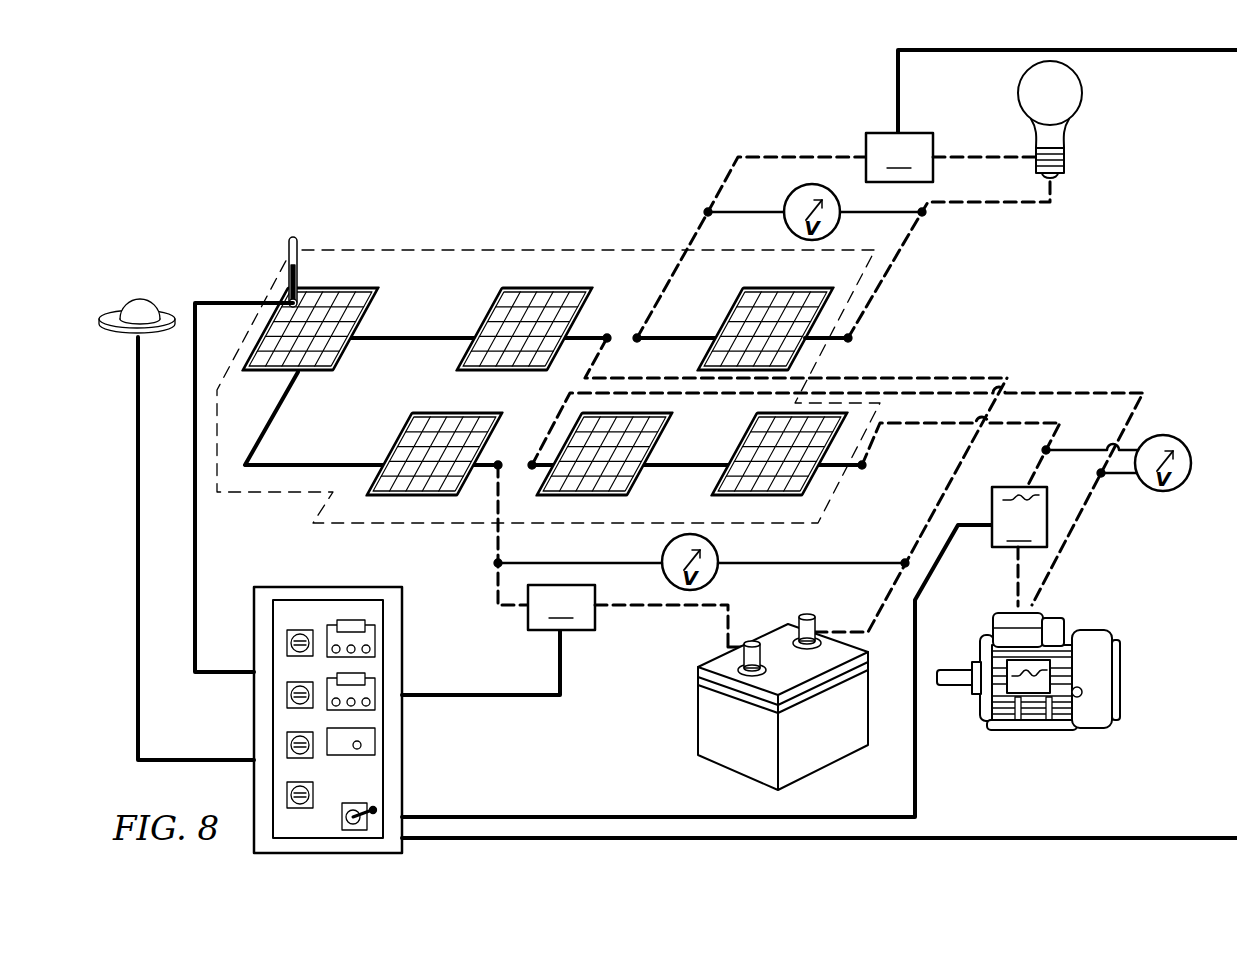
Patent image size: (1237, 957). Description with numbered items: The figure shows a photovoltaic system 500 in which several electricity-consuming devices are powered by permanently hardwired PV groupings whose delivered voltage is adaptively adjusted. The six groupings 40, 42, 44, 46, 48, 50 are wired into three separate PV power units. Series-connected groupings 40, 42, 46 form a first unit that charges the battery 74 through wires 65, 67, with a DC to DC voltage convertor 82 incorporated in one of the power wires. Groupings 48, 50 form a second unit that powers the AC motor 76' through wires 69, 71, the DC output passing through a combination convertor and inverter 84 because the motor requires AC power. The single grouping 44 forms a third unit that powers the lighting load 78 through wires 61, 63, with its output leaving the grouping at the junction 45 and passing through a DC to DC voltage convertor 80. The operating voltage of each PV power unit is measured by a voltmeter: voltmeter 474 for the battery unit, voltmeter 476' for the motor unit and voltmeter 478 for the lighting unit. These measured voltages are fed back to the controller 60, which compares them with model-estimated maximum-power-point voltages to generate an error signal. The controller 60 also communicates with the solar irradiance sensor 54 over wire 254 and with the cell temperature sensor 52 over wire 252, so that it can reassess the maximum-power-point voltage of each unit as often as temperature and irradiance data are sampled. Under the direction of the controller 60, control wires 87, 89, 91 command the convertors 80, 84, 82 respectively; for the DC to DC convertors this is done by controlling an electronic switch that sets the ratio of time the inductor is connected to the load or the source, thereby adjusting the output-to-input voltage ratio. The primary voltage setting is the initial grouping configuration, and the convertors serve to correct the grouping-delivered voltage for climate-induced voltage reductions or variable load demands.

The grouping 40 is at (342, 281).
The grouping 42 is at (557, 281).
The grouping 44 is at (802, 281).
The junction node 45 is at (855, 338).
The grouping 46 is at (422, 521).
The grouping 48 is at (595, 521).
The grouping 50 is at (773, 521).
The cell temperature sensor 52 is at (290, 273).
The solar irradiance sensor 54 is at (110, 317).
The controller 60 is at (405, 780).
The wire 61 is at (1000, 155).
The wire 63 is at (1002, 204).
The wire 65 is at (875, 618).
The wire 67 is at (655, 608).
The wire 69 is at (1068, 393).
The wire 71 is at (1050, 428).
The battery 74 is at (700, 730).
The AC motor 76' is at (1074, 673).
The lighting load 78 is at (1075, 116).
The voltage convertor 80 is at (1051, 116).
The voltage convertor 82 is at (561, 607).
The convertor and inverter 84 is at (1019, 546).
The control wire 87 is at (678, 837).
The control wire 89 is at (568, 815).
The control wire 91 is at (515, 698).
The wire 252 is at (205, 580).
The wire 254 is at (177, 757).
The voltmeter 474 is at (717, 575).
The voltmeter 476' is at (1131, 422).
The voltmeter 478 is at (797, 186).
The PV system 500 is at (515, 250).